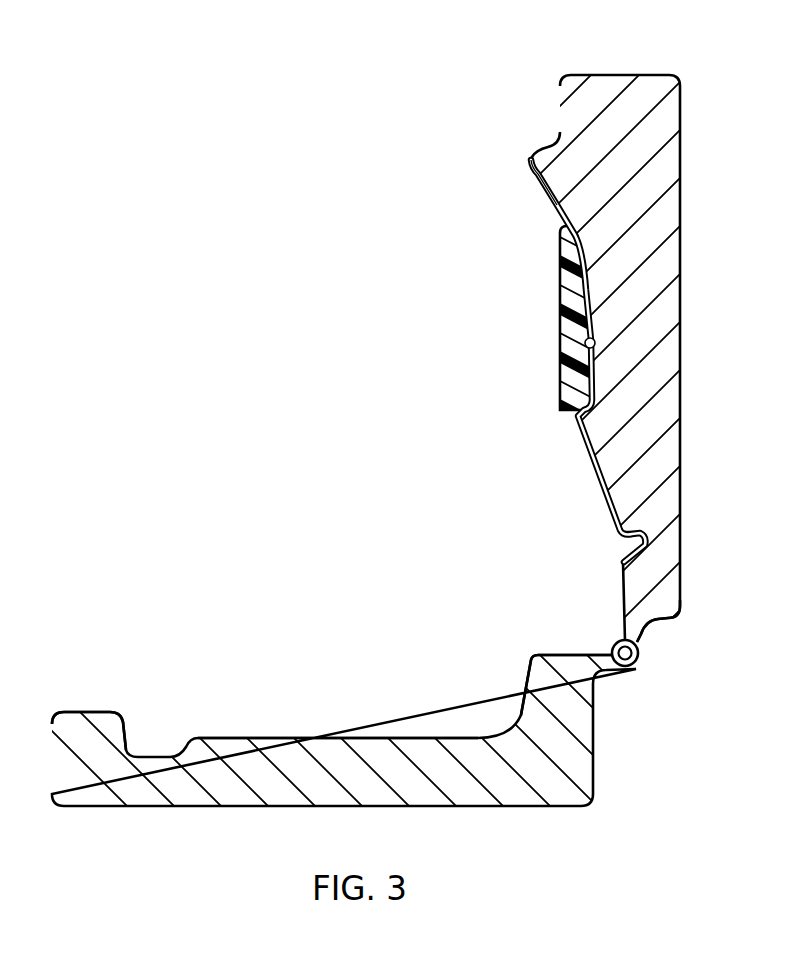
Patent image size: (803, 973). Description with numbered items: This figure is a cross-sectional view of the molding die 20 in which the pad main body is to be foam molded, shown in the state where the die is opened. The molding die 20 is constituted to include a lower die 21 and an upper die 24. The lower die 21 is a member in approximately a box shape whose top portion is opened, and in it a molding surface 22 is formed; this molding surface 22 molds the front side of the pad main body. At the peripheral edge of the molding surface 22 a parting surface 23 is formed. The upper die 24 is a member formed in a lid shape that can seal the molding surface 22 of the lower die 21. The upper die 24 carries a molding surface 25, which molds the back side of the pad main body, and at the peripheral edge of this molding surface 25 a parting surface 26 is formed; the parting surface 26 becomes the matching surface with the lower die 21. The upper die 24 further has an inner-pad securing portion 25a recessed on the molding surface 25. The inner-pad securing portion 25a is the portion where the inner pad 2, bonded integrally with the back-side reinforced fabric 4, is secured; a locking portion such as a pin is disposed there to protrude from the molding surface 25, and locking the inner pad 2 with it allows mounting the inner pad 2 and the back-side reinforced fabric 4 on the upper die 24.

The molding die 20 is at (88, 138).
The parting surface 26 is at (562, 124).
The upper die 24 is at (664, 615).
The inner pad 2 is at (563, 277).
The molding surface 25 is at (590, 468).
The inner-pad securing portion 25a is at (590, 338).
The back-side reinforced fabric 4 is at (554, 198).
The lower die 21 is at (587, 740).
The molding surface 22 is at (323, 738).
The parting surface 23 is at (90, 712).